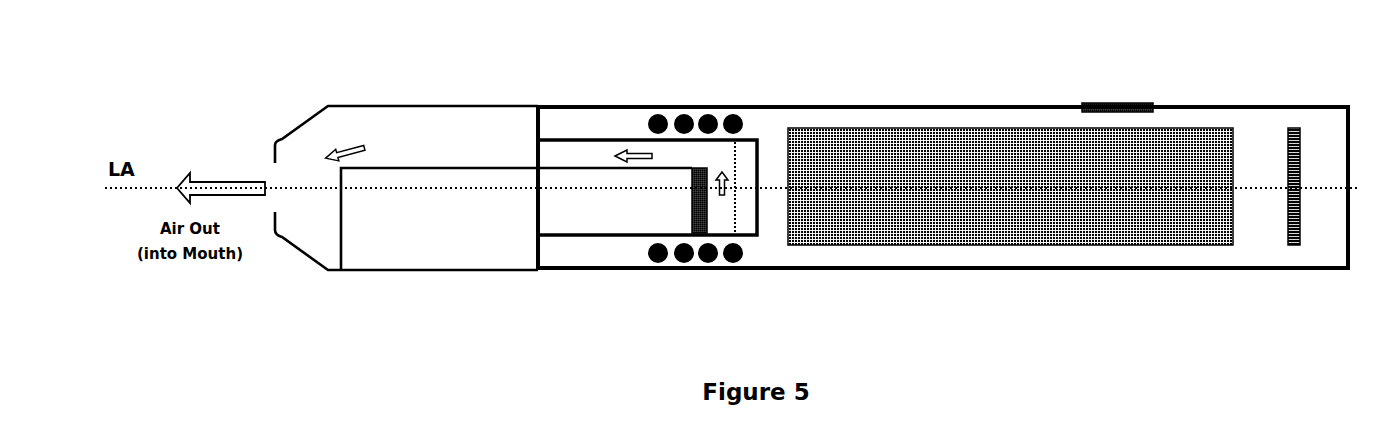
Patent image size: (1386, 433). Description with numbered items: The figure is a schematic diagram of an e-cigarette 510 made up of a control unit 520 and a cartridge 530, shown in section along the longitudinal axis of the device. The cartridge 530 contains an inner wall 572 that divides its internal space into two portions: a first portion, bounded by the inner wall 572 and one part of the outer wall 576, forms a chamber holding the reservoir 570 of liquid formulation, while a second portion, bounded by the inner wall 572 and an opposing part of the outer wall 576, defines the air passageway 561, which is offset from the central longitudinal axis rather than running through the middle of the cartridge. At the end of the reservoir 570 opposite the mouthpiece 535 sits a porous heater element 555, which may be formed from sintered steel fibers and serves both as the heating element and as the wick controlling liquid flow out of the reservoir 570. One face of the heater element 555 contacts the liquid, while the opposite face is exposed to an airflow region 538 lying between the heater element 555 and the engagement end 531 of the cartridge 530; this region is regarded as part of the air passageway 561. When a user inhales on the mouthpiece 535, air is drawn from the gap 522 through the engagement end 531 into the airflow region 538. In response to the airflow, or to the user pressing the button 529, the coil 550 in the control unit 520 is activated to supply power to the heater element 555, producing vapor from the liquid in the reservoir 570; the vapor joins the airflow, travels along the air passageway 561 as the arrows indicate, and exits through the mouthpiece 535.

The e-cigarette 510 is at (417, 208).
The outer wall 576 is at (406, 100).
The coil 550 is at (647, 156).
The porous heater element 555 is at (773, 144).
The engagement end 531 is at (819, 149).
The button 529 is at (1160, 81).
The air passageway 561 is at (488, 137).
The reservoir 570 is at (516, 240).
The inner wall 572 is at (516, 240).
The airflow region 538 is at (681, 242).
The gap 522 is at (793, 223).
The mouthpiece 535 is at (261, 231).
The cartridge 530 is at (359, 295).
The control unit 520 is at (948, 225).